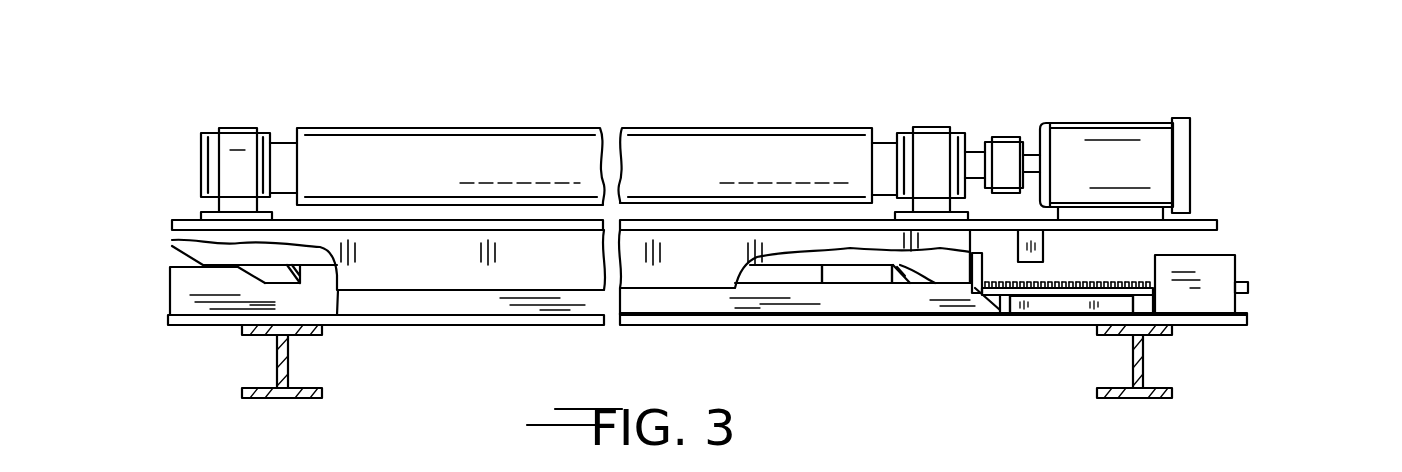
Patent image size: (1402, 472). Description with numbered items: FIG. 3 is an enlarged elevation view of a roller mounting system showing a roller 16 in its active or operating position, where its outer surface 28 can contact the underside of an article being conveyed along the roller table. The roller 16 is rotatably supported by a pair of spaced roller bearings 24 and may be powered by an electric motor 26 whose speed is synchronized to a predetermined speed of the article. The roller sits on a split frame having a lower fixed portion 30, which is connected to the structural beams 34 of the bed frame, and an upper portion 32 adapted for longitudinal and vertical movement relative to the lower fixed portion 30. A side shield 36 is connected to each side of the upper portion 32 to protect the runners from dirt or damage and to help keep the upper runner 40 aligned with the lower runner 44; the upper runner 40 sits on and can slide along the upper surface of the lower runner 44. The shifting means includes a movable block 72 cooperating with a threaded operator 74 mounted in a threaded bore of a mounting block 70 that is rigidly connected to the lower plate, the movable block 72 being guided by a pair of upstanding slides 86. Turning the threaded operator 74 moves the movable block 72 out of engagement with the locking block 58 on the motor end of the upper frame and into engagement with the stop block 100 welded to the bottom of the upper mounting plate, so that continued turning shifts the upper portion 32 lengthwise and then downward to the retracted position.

The roller 16 is at (526, 142).
The roller bearings 24 is at (236, 128).
The electric motor 26 is at (1097, 123).
The outer surface 28 is at (762, 132).
The lower fixed portion 30 is at (495, 325).
The upper portion 32 is at (180, 218).
The structural beams 34 is at (242, 395).
The side shield 36 is at (458, 274).
The upper runner 40 is at (947, 265).
The lower runner 44 is at (170, 302).
The block 58 is at (845, 273).
The mounting block 70 is at (1198, 298).
The movable block 72 is at (1008, 307).
The threaded operator 74 is at (1090, 282).
The upstanding slides 86 is at (1062, 307).
The block 100 is at (1043, 245).